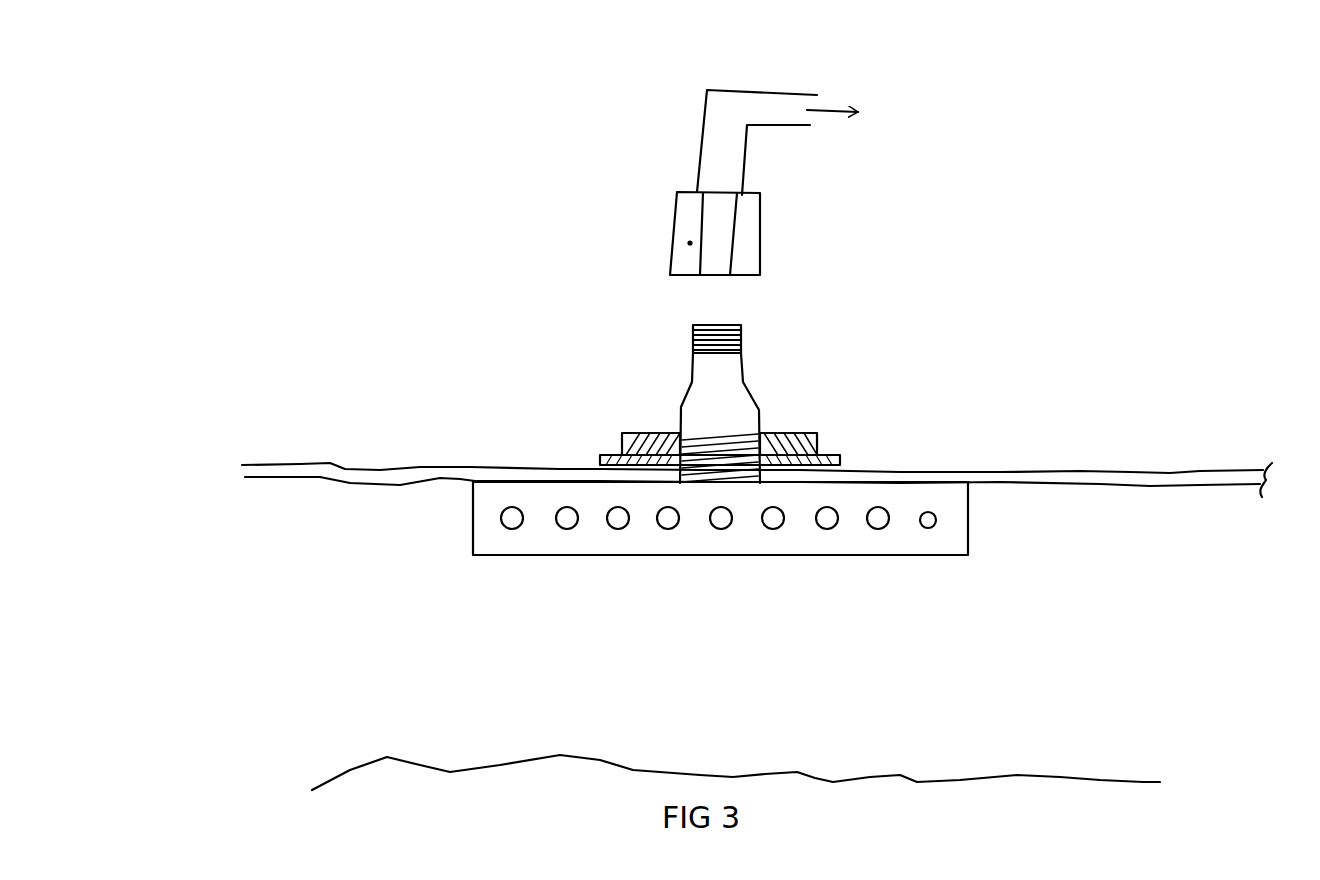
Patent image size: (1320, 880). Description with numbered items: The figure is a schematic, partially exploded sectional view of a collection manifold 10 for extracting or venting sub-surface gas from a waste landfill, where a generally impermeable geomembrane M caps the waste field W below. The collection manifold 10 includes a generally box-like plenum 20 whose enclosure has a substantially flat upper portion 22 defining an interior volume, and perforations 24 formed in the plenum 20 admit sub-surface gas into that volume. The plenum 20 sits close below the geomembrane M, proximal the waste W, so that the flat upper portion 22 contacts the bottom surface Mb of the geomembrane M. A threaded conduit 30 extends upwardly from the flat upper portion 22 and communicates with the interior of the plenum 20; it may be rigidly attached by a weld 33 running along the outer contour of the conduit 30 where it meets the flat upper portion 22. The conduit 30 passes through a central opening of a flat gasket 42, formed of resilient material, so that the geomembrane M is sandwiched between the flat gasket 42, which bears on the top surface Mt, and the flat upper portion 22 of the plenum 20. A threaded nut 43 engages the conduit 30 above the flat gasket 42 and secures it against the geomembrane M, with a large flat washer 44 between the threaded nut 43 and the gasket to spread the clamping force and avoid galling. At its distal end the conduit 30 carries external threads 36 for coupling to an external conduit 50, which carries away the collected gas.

The collection manifold 10 is at (543, 299).
The plenum 20 is at (766, 539).
The substantially flat upper portion 22 is at (900, 485).
The perforations 24 is at (784, 520).
The threaded conduit 30 is at (748, 397).
The weld 33 is at (700, 450).
The external threads 36 is at (737, 338).
The flat gasket 42 is at (830, 470).
The threaded nut 43 is at (817, 445).
The large flat washer 44 is at (607, 458).
The external conduit 50 is at (658, 178).
The geomembrane M is at (761, 483).
The top surface of the geomembrane Mt is at (1128, 472).
The bottom surface of the geomembrane Mb is at (1200, 490).
The waste field W is at (902, 690).